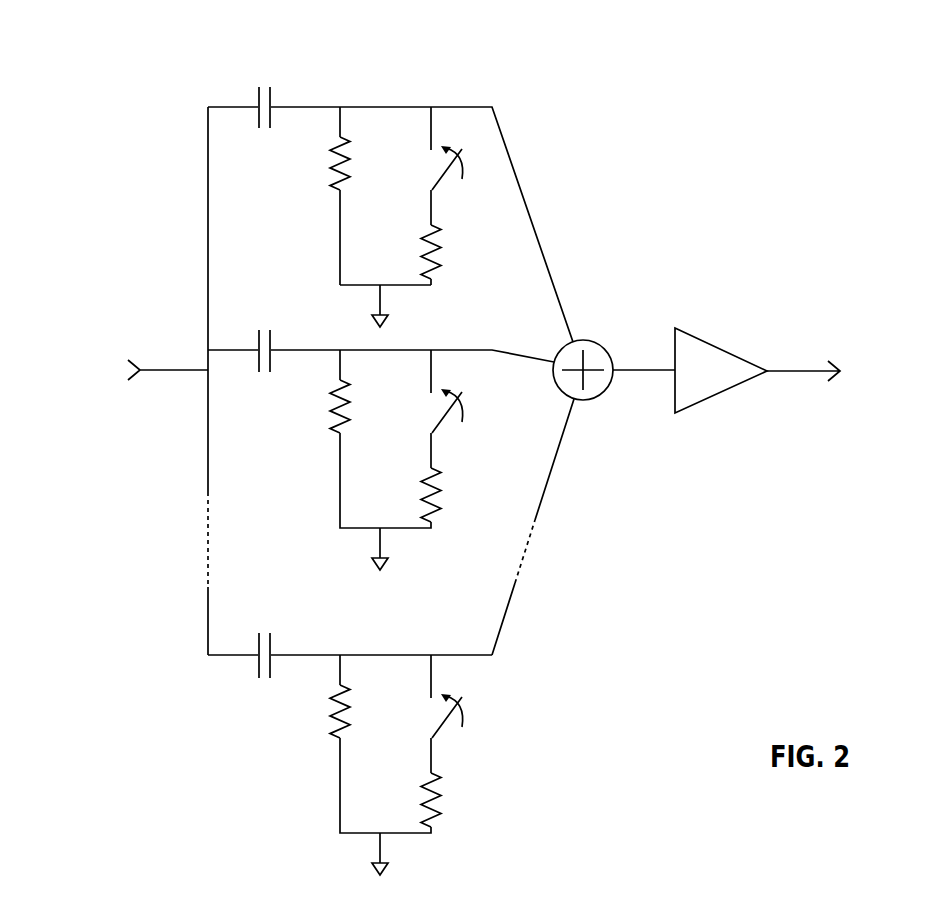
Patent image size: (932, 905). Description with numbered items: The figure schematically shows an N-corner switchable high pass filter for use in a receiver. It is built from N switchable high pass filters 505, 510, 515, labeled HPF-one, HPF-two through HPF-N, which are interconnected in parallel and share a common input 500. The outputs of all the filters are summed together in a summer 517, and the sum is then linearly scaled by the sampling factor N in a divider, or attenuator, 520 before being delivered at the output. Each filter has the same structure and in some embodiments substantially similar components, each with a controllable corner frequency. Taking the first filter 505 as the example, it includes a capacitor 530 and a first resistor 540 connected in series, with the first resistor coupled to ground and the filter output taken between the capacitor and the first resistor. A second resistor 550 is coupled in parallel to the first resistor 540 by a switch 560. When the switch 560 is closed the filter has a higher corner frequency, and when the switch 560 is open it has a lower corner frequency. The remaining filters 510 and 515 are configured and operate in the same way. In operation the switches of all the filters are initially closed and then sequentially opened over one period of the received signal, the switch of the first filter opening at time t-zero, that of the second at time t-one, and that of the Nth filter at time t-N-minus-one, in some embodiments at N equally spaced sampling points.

The common input 500 is at (129, 391).
The switchable high pass filter 505 is at (430, 198).
The switchable high pass filter 510 is at (572, 533).
The switchable high pass filter 515 is at (530, 770).
The summer 517 is at (590, 338).
The divider 520 is at (703, 402).
The capacitor 530 is at (282, 83).
The resistor R1 540 is at (330, 172).
The resistor R2 550 is at (443, 265).
The switch 560 is at (440, 182).